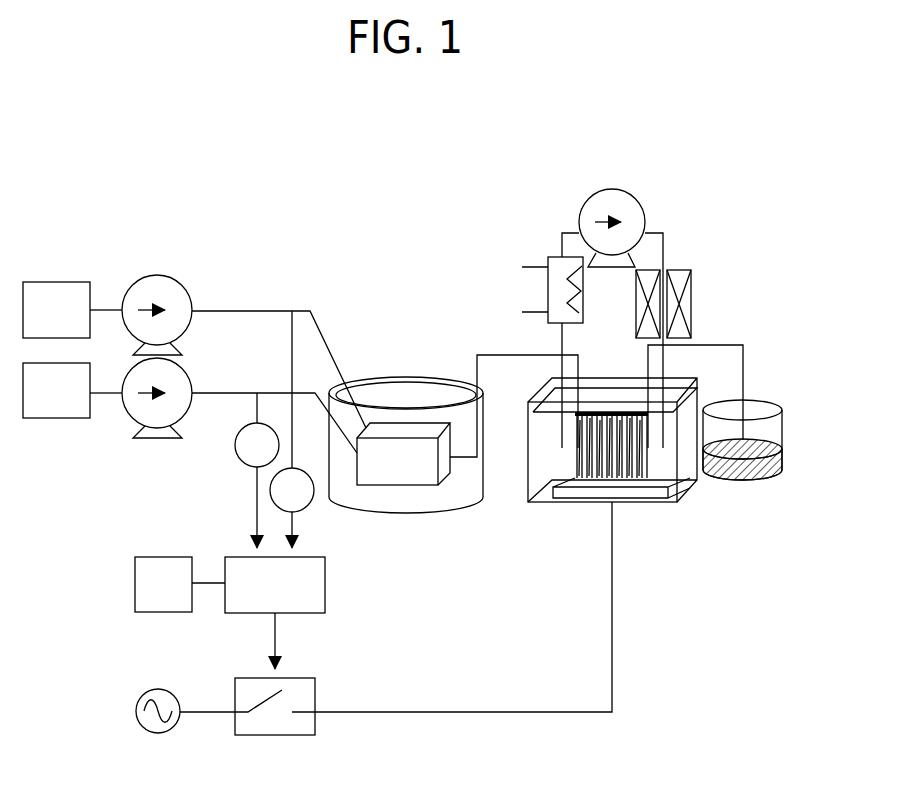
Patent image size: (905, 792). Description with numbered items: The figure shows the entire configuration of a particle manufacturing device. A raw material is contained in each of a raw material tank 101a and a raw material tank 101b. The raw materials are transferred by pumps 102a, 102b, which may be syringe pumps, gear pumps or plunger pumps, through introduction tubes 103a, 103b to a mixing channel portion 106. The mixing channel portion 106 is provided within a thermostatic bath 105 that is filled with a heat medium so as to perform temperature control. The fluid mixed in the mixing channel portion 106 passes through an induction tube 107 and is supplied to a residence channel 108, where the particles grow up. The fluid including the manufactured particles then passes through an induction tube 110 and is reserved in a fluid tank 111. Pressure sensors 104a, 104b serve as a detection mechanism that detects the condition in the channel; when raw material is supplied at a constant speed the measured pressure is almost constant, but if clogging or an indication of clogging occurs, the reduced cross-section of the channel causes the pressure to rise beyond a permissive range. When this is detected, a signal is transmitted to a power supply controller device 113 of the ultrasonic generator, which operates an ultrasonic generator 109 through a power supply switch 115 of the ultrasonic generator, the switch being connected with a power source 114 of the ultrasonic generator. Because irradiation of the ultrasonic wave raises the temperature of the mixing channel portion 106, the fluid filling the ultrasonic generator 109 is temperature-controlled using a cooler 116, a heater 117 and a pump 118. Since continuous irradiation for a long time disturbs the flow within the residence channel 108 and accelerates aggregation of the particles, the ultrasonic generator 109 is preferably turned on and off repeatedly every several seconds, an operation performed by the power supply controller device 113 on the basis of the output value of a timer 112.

The raw material tank 101a is at (55, 282).
The raw material tank 101b is at (55, 418).
The pump 102a is at (152, 275).
The pump 102b is at (132, 425).
The introduction tube 103a is at (228, 309).
The introduction tube 103b is at (219, 391).
The pressure sensor 104a is at (308, 507).
The pressure sensor 104b is at (233, 452).
The thermostatic bath 105 is at (413, 503).
The mixing channel portion 106 is at (402, 447).
The induction tube 107 is at (503, 354).
The residence channel 108 is at (582, 503).
The ultrasonic generator 109 is at (638, 498).
The induction tube 110 is at (744, 365).
The fluid tank 111 is at (750, 475).
The timer 112 is at (133, 582).
The power supply controller device of ultrasonic generator 113 is at (325, 597).
The power source of ultrasonic generator 114 is at (142, 728).
The power supply switch of ultrasonic generator 115 is at (315, 692).
The cooler 116 is at (563, 262).
The heater 117 is at (678, 274).
The pump 118 is at (610, 189).